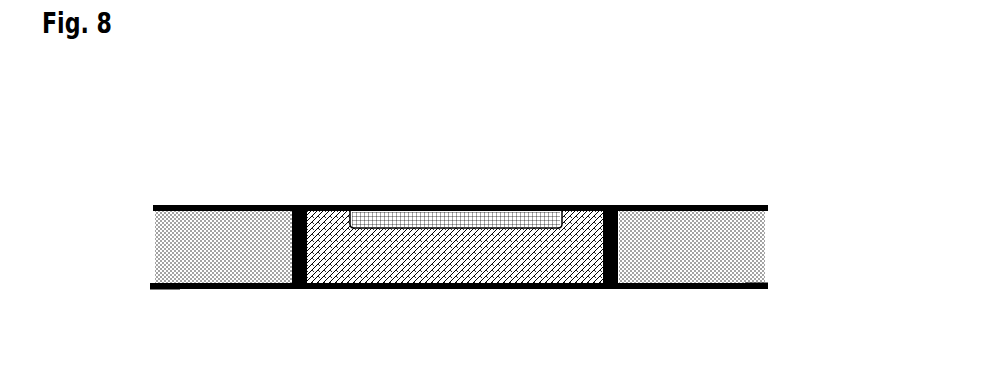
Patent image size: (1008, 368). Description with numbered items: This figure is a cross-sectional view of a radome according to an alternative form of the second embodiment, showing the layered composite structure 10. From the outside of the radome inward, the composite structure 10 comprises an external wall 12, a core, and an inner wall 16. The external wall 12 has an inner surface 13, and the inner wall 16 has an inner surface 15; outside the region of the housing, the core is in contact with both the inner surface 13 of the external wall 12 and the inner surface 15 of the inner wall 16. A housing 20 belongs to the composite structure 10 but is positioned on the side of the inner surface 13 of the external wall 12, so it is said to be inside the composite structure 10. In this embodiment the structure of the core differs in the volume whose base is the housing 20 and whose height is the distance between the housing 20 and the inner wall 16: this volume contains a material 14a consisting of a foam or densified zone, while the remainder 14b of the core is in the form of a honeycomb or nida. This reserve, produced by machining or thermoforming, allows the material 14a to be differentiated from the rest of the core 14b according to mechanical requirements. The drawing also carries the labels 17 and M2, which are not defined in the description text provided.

The composite structure 10 is at (185, 124).
The external wall 12 is at (803, 210).
The inner surface 13 is at (186, 214).
The material 14a is at (455, 247).
The remainder of the core 14b is at (692, 247).
The inner surface 15 is at (748, 280).
The inner wall 16 is at (803, 284).
The lower surface of dielectric 17 is at (164, 292).
The housing 20 is at (573, 232).
The metal via M2 is at (290, 270).